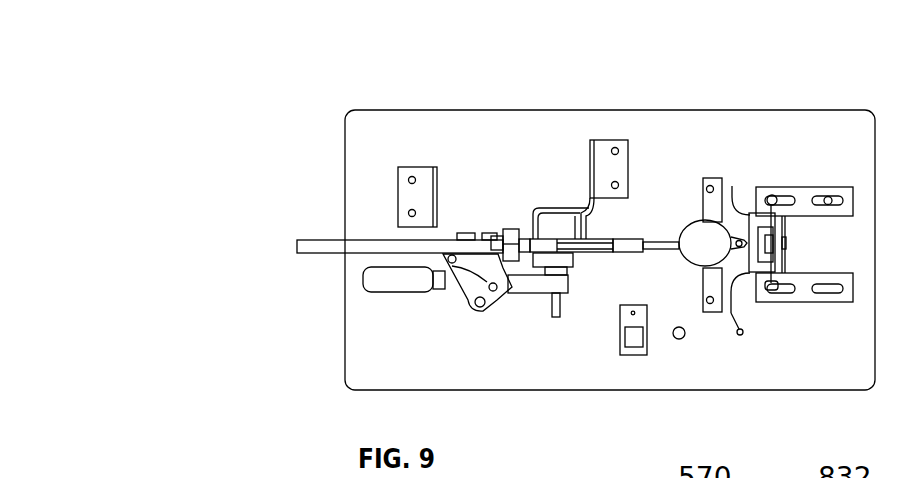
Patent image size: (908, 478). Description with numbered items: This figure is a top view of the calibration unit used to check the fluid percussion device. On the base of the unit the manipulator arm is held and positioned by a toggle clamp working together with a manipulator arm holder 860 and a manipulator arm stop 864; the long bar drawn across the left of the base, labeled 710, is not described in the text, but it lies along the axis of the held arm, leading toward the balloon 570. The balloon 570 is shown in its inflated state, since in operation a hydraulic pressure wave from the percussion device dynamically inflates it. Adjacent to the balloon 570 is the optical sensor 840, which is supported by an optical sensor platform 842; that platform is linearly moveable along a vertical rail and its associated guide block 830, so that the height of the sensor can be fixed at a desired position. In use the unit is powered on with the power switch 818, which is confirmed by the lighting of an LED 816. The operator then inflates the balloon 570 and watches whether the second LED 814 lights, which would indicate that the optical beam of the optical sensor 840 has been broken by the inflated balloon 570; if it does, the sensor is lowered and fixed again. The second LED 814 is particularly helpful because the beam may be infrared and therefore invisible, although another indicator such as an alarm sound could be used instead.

The slide bar 710 is at (316, 242).
The manipulator arm holder 860 is at (538, 206).
The manipulator arm stop 864 is at (579, 212).
The balloon 570 is at (700, 238).
The optical sensor 840 is at (718, 206).
The optical sensor platform 842 is at (740, 335).
The guide block 830 is at (775, 268).
The power switch 818 is at (630, 357).
The LED 816 is at (632, 315).
The second LED 814 is at (678, 340).